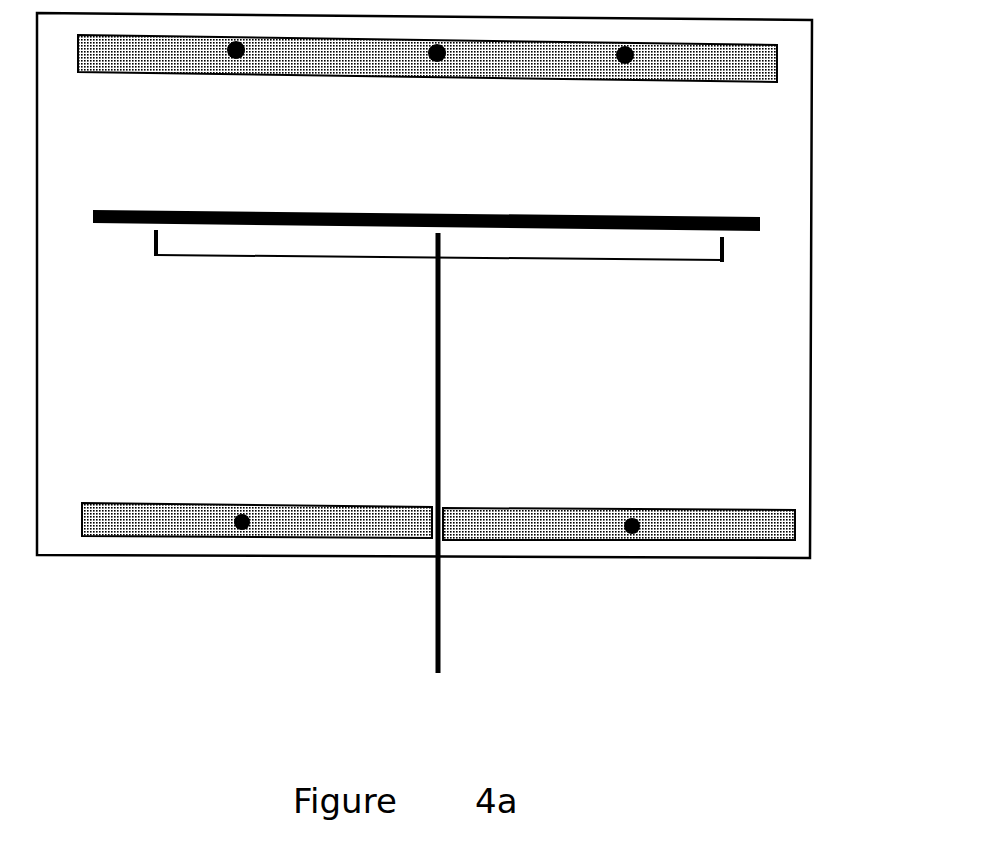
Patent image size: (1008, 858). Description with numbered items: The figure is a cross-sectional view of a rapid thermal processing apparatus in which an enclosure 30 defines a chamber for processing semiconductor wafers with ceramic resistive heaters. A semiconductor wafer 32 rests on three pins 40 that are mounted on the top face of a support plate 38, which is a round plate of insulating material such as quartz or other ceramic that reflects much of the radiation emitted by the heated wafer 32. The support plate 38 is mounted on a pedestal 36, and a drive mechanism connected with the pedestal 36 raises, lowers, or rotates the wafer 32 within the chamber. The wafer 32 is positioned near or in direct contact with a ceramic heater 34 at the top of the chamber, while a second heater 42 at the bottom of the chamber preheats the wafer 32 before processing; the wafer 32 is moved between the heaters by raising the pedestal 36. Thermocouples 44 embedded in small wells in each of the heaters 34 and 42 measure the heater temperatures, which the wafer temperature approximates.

The enclosure 30 is at (812, 372).
The semiconductor wafer 32 is at (577, 217).
The ceramic heater 34 is at (381, 75).
The pedestal 36 is at (441, 428).
The support plate 38 is at (283, 262).
The pins 40 is at (153, 240).
The second heater 42 is at (352, 523).
The thermocouples 44 is at (244, 76).